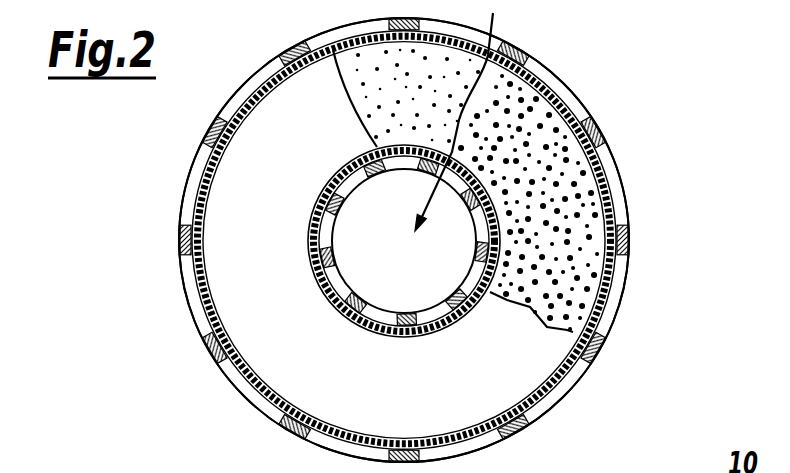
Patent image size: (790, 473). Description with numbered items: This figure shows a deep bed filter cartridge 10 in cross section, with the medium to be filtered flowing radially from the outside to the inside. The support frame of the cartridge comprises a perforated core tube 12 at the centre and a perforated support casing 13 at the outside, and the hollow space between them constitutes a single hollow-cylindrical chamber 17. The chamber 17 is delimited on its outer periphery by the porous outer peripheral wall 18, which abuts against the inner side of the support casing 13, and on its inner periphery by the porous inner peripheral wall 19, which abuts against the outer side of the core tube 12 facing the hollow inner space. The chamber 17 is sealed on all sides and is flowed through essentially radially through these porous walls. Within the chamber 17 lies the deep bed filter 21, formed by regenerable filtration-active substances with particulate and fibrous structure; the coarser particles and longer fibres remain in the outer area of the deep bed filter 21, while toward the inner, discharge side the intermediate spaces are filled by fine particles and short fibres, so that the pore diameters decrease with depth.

The deep bed filter cartridge 10 is at (186, 377).
The perforated core tube 12 is at (467, 305).
The perforated support casing 13 is at (605, 310).
The hollow-cylindrical chamber 17 is at (252, 224).
The outer peripheral wall 18 is at (203, 203).
The inner peripheral wall 19 is at (497, 241).
The deep bed filter 21 is at (508, 133).